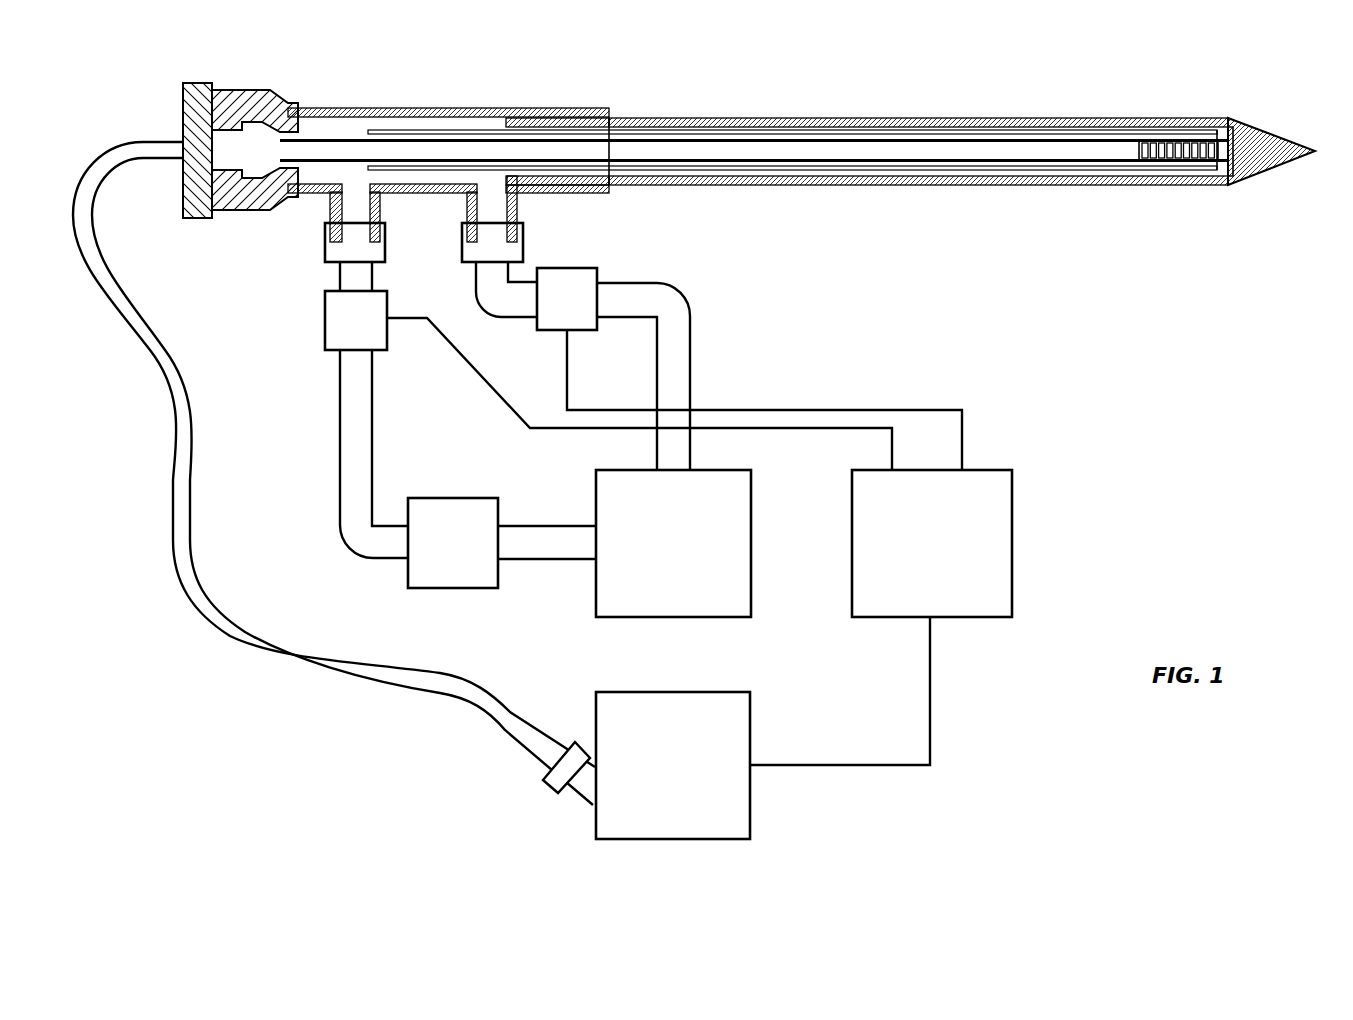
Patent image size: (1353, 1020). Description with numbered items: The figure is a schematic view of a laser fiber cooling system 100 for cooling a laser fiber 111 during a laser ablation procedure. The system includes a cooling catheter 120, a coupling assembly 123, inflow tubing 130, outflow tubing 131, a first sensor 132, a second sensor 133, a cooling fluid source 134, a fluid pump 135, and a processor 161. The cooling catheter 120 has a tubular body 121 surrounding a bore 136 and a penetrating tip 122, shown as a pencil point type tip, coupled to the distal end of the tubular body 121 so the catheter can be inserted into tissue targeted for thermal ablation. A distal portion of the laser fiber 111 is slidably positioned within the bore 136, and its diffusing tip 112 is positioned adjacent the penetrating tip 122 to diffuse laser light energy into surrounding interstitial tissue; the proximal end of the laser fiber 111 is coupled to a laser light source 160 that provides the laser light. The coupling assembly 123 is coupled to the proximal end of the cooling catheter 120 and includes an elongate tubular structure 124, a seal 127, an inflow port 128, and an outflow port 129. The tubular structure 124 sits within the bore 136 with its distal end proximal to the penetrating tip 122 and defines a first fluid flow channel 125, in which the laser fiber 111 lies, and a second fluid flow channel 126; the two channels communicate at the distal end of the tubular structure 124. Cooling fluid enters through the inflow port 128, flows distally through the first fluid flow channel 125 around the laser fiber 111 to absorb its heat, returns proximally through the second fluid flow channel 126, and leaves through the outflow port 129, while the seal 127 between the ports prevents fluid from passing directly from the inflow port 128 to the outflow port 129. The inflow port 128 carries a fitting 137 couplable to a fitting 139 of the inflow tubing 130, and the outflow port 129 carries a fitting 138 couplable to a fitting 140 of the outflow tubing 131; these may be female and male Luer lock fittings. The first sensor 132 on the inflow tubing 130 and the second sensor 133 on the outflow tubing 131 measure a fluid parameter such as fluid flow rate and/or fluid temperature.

The laser fiber cooling system 100 is at (866, 83).
The laser fiber 111 is at (975, 152).
The diffusing tip 112 is at (1163, 152).
The cooling catheter 120 is at (684, 106).
The tubular body 121 is at (1140, 117).
The penetrating tip 122 is at (1260, 128).
The coupling assembly 123 is at (557, 100).
The elongate tubular structure 124 is at (495, 128).
The first fluid flow channel 125 is at (773, 138).
The second fluid flow channel 126 is at (1032, 117).
The seal 127 is at (410, 118).
The inflow port 128 is at (331, 230).
The outflow port 129 is at (468, 230).
The inflow tubing 130 is at (375, 410).
The outflow tubing 131 is at (693, 326).
The first sensor 132 is at (370, 332).
The second sensor 133 is at (582, 312).
The cooling fluid source 134 is at (688, 557).
The fluid pump 135 is at (468, 557).
The bore 136 is at (1235, 117).
The fitting 137 is at (383, 203).
The fitting 138 is at (519, 203).
The fitting 139 is at (388, 255).
The fitting 140 is at (524, 247).
The laser light source 160 is at (688, 777).
The processor 161 is at (947, 557).